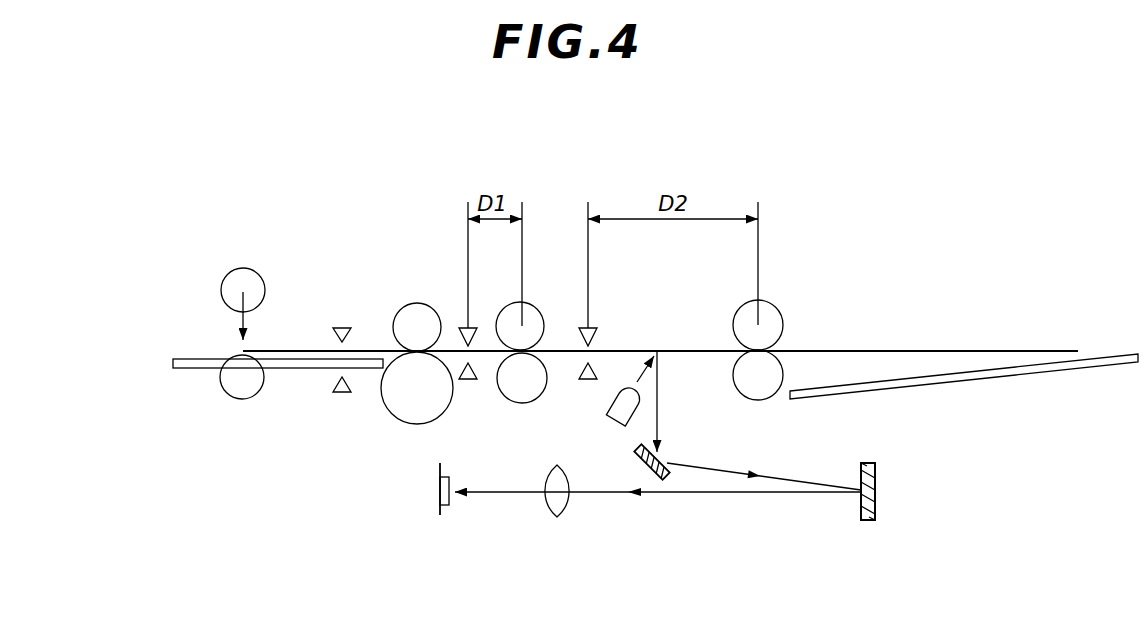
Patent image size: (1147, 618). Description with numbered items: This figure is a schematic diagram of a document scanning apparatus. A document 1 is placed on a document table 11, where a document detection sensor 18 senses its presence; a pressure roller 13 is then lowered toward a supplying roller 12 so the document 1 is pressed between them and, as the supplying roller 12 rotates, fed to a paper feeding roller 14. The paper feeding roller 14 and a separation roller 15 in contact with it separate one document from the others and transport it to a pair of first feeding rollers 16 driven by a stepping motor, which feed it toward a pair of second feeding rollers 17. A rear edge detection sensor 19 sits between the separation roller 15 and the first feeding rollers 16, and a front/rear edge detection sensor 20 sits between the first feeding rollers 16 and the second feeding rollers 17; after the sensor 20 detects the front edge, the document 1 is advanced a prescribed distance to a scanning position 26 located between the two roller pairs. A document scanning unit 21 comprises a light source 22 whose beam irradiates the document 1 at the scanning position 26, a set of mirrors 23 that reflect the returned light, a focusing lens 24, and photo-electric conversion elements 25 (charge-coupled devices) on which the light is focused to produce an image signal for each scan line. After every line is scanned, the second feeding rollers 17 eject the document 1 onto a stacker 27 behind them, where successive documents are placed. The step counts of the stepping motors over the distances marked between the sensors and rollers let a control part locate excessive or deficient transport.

The document 1 is at (268, 350).
The document table 11 is at (200, 370).
The supplying roller 12 is at (257, 396).
The pressure roller 13 is at (243, 268).
The paper feeding roller 14 is at (391, 412).
The separation roller 15 is at (412, 304).
The first feeding rollers 16 is at (538, 302).
The second feeding rollers 17 is at (780, 312).
The document detection sensor 18 is at (341, 326).
The rear edge detection sensor 19 is at (462, 326).
The front/rear edge detection sensor 20 is at (585, 328).
The document scanning unit 21 is at (673, 481).
The light source 22 is at (607, 410).
The mirrors 23 is at (636, 460).
The focusing lens 24 is at (552, 512).
The photo-electric conversion elements 25 is at (438, 508).
The scanning position 26 is at (656, 334).
The stacker 27 is at (968, 383).